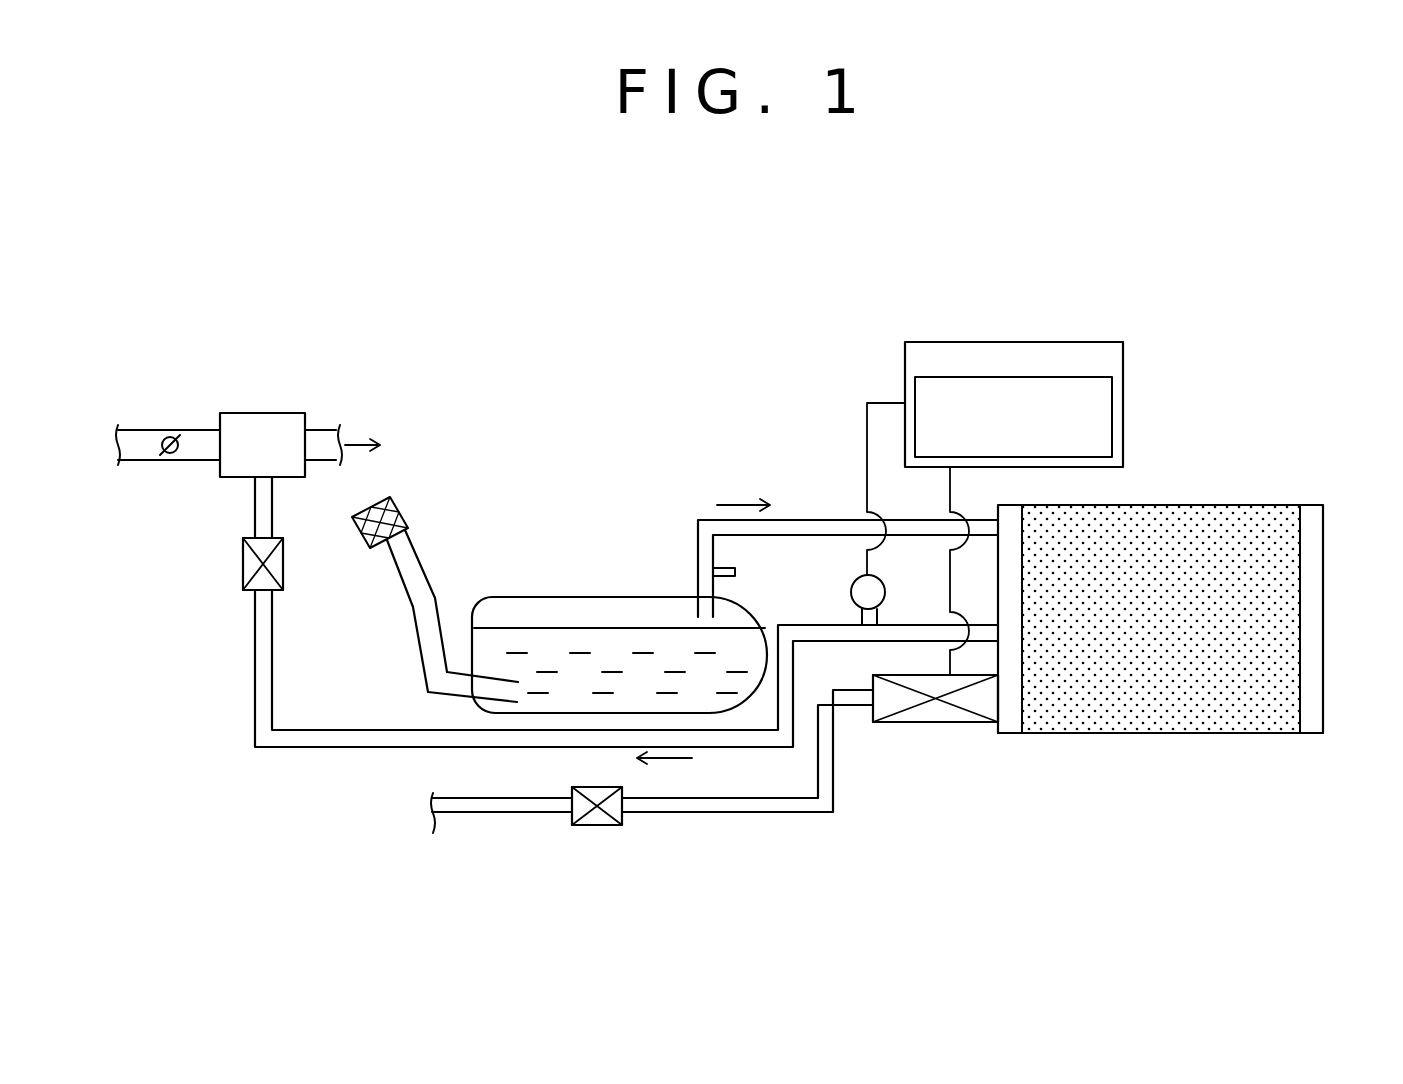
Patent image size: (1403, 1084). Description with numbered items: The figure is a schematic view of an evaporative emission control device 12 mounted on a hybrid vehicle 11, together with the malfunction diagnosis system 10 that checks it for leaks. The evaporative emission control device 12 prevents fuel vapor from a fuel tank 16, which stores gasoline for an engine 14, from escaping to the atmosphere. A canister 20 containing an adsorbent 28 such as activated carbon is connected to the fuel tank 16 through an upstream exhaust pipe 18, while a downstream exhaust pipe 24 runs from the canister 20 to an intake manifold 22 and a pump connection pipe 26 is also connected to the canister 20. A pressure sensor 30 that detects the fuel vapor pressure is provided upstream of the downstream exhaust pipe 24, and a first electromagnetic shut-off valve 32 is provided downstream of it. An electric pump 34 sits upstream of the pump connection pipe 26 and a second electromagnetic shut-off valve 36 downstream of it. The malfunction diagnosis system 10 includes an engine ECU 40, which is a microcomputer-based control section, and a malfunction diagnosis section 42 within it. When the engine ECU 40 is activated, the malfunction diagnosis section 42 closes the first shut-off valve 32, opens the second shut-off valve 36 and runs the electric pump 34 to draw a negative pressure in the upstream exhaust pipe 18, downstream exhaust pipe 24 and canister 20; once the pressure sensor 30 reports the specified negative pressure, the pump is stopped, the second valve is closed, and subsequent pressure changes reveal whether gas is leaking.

The malfunction diagnosis system 10 is at (1049, 477).
The hybrid vehicle 11 is at (1243, 298).
The evaporative emission control device 12 is at (1188, 613).
The engine 14 is at (193, 430).
The fuel tank 16 is at (542, 597).
The upstream exhaust pipe 18 is at (823, 520).
The canister 20 is at (1162, 733).
The intake manifold 22 is at (282, 413).
The downstream exhaust pipe 24 is at (302, 747).
The pump connection pipe 26 is at (725, 812).
The adsorbent 28 is at (1203, 640).
The pressure sensor 30 is at (851, 592).
The first electromagnetic shut-off valve 32 is at (243, 563).
The electric pump 34 is at (912, 722).
The second electromagnetic shut-off valve 36 is at (595, 825).
The engine ECU 40 is at (990, 342).
The malfunction diagnosis section 42 is at (1112, 413).